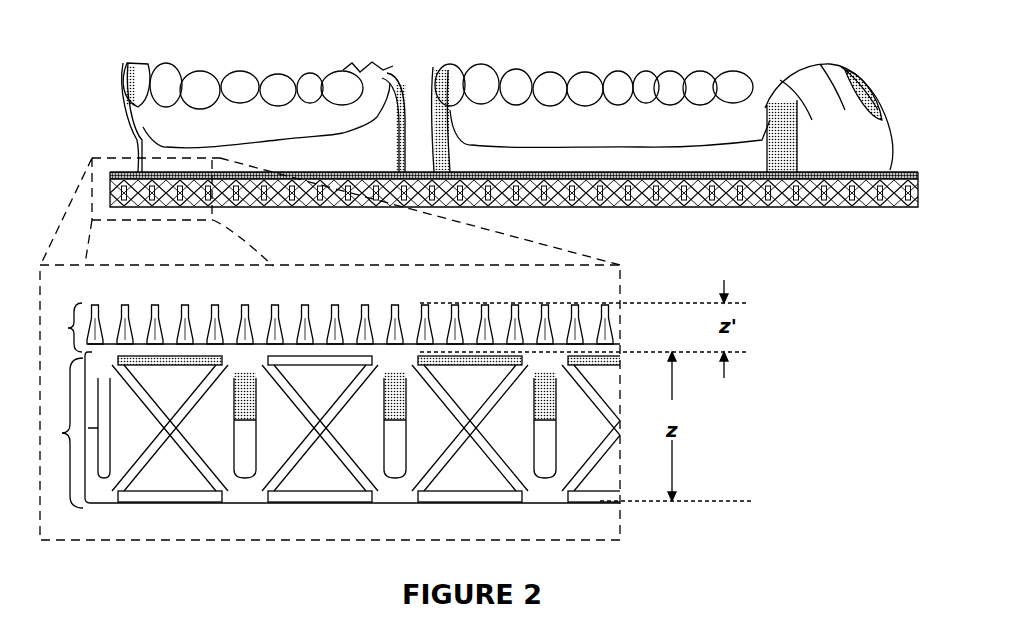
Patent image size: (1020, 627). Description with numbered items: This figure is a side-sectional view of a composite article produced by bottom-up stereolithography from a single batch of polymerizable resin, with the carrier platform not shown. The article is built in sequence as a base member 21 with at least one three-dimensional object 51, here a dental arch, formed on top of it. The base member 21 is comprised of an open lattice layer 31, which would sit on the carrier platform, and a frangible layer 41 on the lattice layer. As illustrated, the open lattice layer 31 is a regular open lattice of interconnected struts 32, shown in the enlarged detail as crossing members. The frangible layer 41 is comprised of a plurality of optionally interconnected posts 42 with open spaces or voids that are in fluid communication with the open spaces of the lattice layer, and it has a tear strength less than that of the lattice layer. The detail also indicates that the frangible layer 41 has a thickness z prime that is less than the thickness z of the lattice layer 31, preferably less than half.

The base member 21 is at (843, 180).
The open lattice layer 31 is at (348, 476).
The interconnected struts 32 is at (362, 472).
The frangible layer 41 is at (385, 302).
The posts 42 is at (388, 330).
The three-dimensional object 51 is at (465, 97).